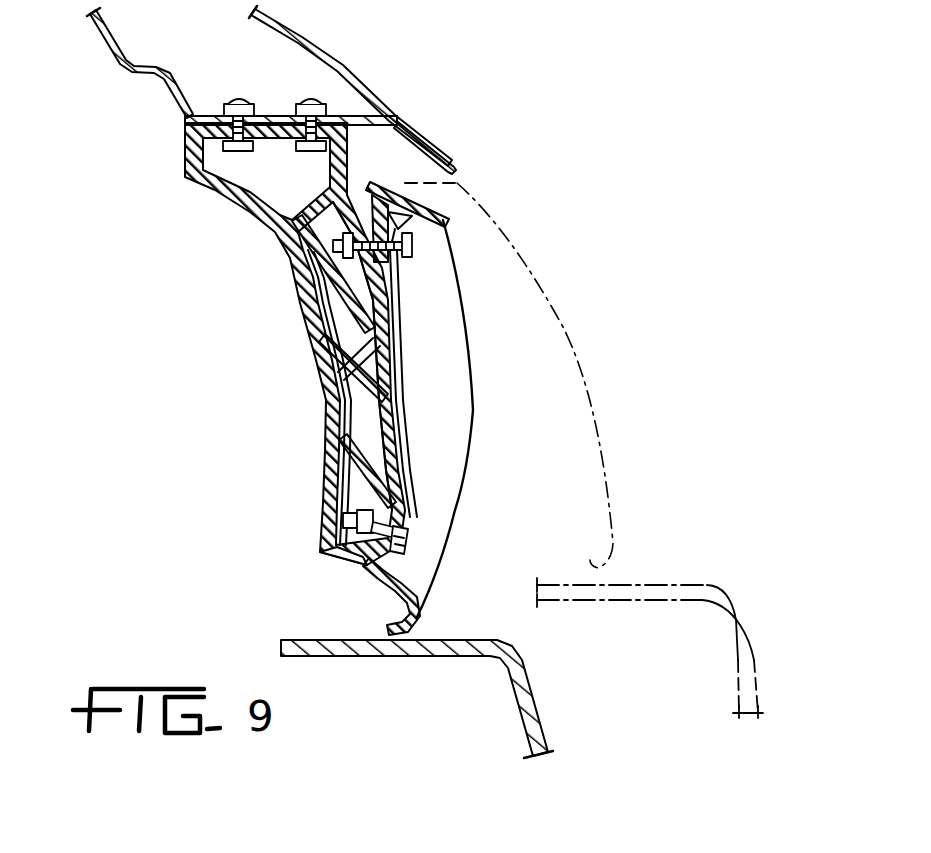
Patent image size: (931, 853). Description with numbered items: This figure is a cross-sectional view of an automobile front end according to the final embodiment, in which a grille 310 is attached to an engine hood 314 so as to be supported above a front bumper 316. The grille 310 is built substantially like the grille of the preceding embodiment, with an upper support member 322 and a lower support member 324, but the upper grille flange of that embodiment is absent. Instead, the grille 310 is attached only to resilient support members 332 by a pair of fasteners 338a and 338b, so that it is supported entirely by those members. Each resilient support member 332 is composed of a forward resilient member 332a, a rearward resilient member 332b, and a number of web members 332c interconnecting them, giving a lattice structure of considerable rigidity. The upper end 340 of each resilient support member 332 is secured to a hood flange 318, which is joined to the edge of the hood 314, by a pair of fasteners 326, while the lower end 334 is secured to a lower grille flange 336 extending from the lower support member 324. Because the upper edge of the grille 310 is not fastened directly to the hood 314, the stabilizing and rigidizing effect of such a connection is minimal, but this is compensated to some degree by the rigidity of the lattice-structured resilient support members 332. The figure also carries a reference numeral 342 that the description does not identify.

The grille 310 is at (606, 358).
The engine hood 314 is at (380, 93).
The front bumper 316 is at (742, 623).
The hood flange 318 is at (203, 116).
The upper support member 322 is at (440, 223).
The lower support member 324 is at (422, 618).
The fasteners 326 is at (296, 108).
The resilient support members 332 is at (283, 253).
The forward resilient member 332a is at (385, 388).
The rearward resilient member 332b is at (330, 460).
The web members 332c is at (347, 338).
The lower end 334 is at (364, 564).
The lower grille flange 336 is at (367, 558).
The fastener 338a is at (413, 250).
The fastener 338b is at (407, 530).
The upper end 340 is at (268, 137).
The channel 342 is at (435, 440).